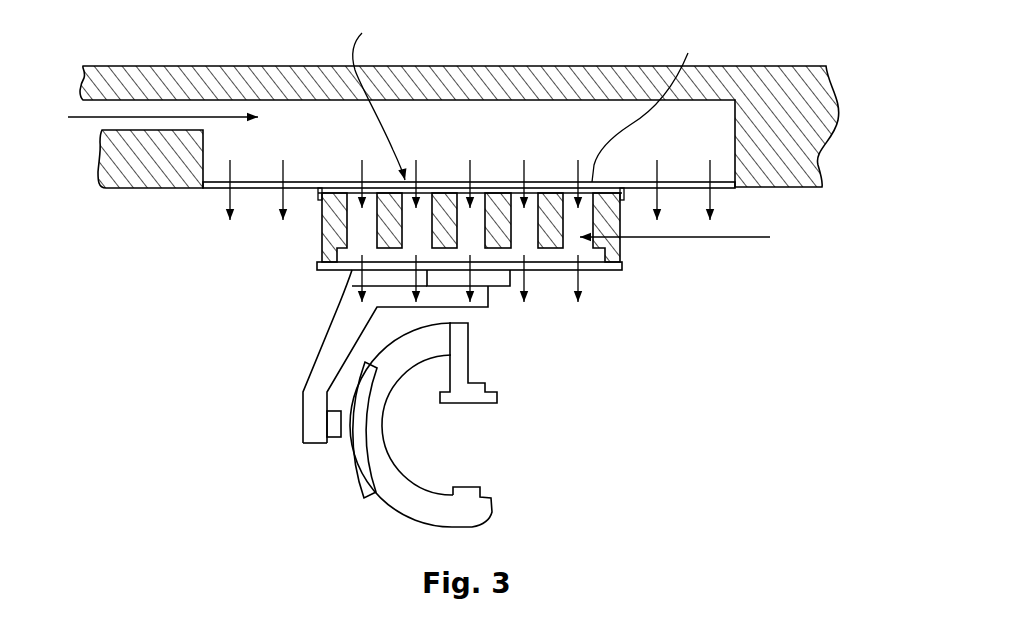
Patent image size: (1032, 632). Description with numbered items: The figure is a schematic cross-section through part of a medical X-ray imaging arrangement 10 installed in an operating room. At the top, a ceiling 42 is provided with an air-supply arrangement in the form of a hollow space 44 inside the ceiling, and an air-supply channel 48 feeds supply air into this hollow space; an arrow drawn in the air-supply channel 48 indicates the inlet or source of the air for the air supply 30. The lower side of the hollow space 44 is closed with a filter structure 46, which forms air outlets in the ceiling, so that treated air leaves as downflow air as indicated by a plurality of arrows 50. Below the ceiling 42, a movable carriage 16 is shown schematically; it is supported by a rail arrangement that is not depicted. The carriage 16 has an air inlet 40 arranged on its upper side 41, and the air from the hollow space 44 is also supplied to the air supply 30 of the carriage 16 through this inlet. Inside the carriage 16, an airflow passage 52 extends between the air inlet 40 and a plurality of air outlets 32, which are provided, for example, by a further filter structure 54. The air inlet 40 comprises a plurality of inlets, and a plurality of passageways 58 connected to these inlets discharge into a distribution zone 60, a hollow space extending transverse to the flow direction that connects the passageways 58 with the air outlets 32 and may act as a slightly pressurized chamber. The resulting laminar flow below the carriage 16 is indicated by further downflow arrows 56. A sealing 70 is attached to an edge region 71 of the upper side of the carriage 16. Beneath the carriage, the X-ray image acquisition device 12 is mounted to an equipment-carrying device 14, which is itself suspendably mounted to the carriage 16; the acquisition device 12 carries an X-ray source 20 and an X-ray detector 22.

The medical X-ray imaging arrangement 10 is at (742, 326).
The X-ray image acquisition device 12 is at (335, 454).
The equipment-carrying device 14 is at (495, 280).
The movable carriage 16 is at (318, 237).
The X-ray source 20 is at (482, 495).
The X-ray detector 22 is at (497, 400).
The air supply 30 is at (693, 237).
The air outlets 32 is at (527, 268).
The air inlet 40 is at (376, 93).
The upper side 41 is at (646, 101).
The ceiling 42 is at (823, 152).
The hollow space 44 is at (515, 113).
The filter structure 46 is at (214, 190).
The air-supply channel 48 is at (95, 118).
The arrows (downflow air) 50 is at (222, 189).
The airflow passage 52 is at (338, 310).
The further filter structure 54 is at (363, 229).
The further downflow arrows 56 is at (583, 285).
The passageways 58 is at (420, 198).
The distribution zone 60 is at (500, 255).
The sealing 70 is at (296, 196).
The edge region 71 is at (325, 192).